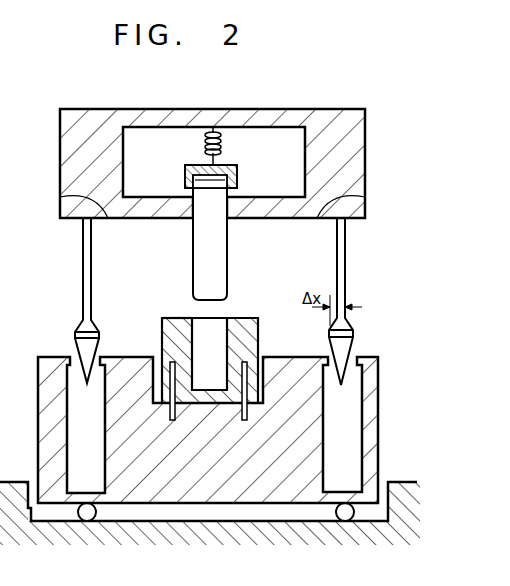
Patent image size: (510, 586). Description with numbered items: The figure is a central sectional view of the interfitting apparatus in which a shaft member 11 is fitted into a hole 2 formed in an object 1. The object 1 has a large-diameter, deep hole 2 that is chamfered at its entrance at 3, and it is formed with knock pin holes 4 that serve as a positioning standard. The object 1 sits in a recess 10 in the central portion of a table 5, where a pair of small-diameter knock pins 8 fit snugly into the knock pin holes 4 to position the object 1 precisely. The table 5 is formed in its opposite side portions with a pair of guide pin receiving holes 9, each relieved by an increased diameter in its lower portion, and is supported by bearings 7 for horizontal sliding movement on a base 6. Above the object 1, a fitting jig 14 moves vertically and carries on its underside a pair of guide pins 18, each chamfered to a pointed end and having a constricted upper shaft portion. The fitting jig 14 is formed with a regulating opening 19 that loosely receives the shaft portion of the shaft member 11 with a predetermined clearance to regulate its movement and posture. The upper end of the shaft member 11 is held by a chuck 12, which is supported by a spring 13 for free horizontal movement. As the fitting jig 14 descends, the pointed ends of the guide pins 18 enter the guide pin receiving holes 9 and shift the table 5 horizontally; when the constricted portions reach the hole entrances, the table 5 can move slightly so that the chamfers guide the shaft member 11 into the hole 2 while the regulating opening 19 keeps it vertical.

The object 1 is at (256, 330).
The hole 2 is at (222, 335).
The chamfer 3 is at (190, 317).
The knock pin holes 4 is at (248, 364).
The table 5 is at (378, 388).
The base 6 is at (404, 482).
The bearings 7 is at (346, 520).
The knock pins 8 is at (170, 396).
The guide pin receiving holes 9 is at (72, 392).
The recess 10 is at (153, 360).
The shaft member 11 is at (191, 251).
The chuck 12 is at (237, 167).
The spring 13 is at (203, 143).
The fitting jig 14 is at (365, 154).
The guide pins 18 is at (346, 258).
The regulating opening 19 is at (228, 218).